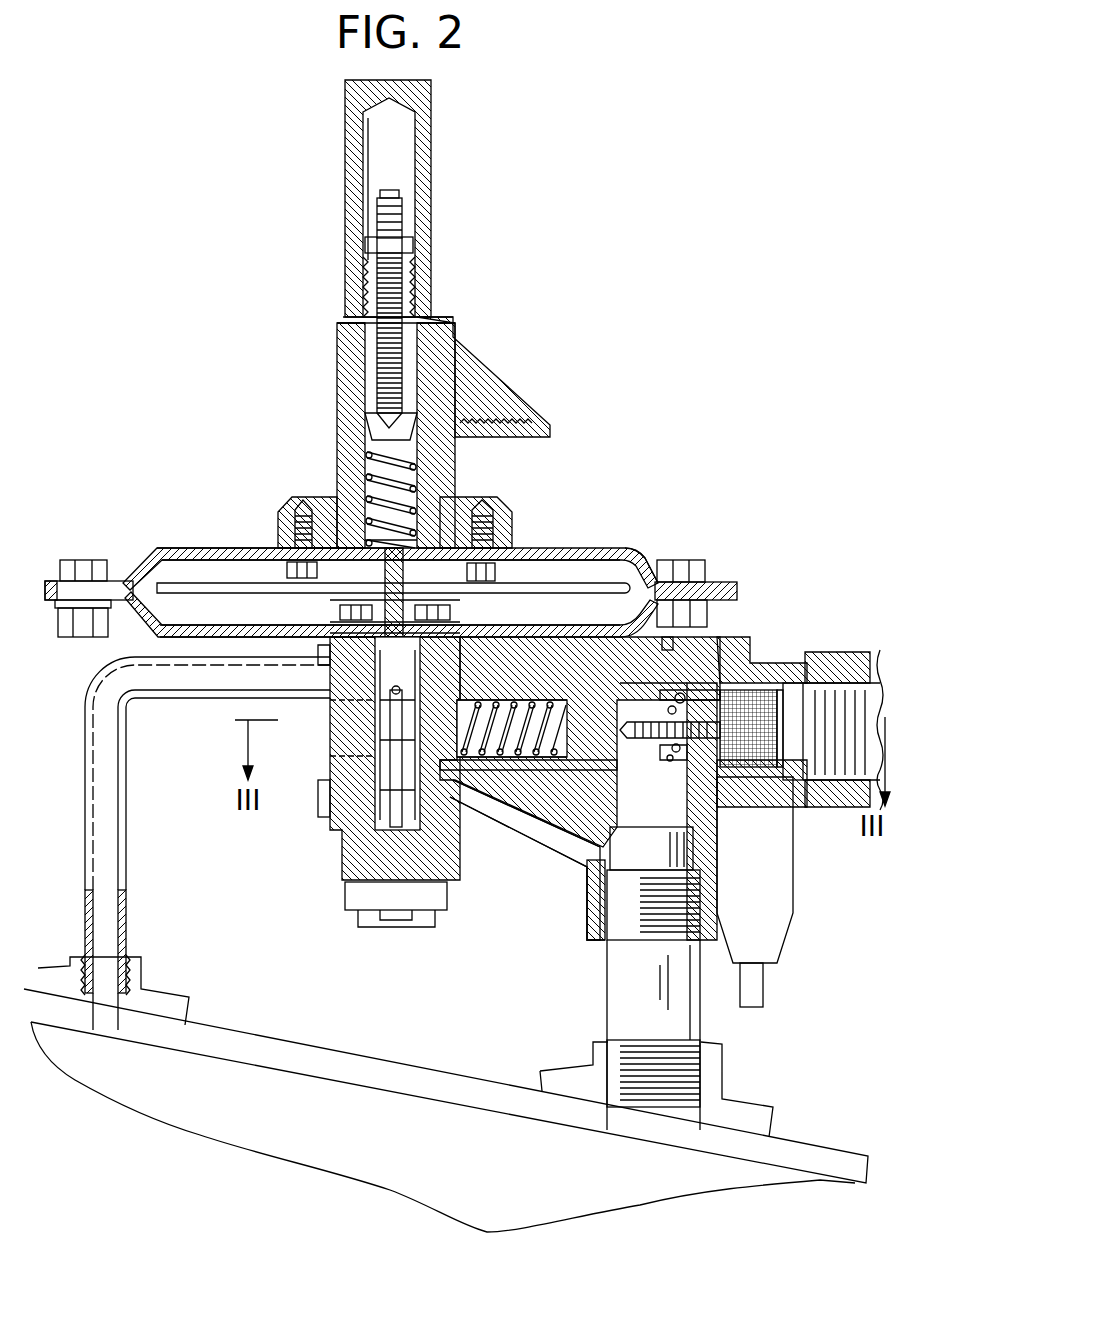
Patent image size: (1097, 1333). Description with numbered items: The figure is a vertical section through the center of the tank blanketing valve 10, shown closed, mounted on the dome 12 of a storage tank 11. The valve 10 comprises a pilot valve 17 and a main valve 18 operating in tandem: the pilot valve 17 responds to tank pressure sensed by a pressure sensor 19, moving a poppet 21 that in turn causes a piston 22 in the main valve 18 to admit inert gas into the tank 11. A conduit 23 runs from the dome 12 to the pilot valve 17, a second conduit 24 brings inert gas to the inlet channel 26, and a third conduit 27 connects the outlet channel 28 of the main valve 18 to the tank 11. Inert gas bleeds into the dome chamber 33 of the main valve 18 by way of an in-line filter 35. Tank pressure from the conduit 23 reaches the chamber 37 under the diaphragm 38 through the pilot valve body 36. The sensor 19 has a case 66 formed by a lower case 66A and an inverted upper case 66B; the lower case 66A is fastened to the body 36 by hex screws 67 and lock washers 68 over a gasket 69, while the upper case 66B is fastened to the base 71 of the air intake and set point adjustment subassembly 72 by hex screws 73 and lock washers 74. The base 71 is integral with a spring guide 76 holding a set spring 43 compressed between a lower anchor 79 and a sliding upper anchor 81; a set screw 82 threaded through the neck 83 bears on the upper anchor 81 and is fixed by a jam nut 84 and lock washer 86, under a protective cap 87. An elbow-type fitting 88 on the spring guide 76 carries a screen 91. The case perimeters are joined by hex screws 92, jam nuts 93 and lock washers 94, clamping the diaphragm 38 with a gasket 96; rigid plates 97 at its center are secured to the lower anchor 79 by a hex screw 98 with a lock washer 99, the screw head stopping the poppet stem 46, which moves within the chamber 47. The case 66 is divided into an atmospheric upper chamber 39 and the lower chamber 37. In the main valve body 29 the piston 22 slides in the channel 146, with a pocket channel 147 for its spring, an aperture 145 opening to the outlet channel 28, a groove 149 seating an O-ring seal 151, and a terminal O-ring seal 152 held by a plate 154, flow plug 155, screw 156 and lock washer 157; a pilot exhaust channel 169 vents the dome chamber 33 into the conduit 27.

The tank blanketing valve 10 is at (590, 436).
The storage tank 11 is at (368, 1165).
The dome 12 is at (332, 1053).
The pilot valve 17 is at (335, 840).
The main valve 18 is at (575, 878).
The pressure sensor 19 is at (520, 545).
The poppet 21 is at (330, 735).
The piston 22 is at (560, 745).
The conduit 23 is at (125, 780).
The conduit 24 is at (840, 668).
The inlet channel 26 is at (825, 690).
The conduit 27 is at (607, 1000).
The outlet channel 28 is at (607, 935).
The body 29 is at (520, 820).
The dome chamber 33 is at (540, 725).
The in-line filter 35 is at (795, 905).
The body 36 is at (330, 758).
The chamber 37 is at (205, 632).
The diaphragm 38 is at (143, 578).
The upper chamber 39 is at (605, 570).
The set spring 43 is at (405, 470).
The stem 46 is at (322, 662).
The chamber 47 is at (345, 712).
The case 66 is at (220, 548).
The lower case 66A is at (160, 625).
The upper case 66B is at (165, 548).
The hex screws 67 is at (340, 612).
The lock washers 68 is at (330, 601).
The gasket 69 is at (330, 634).
The base 71 is at (290, 497).
The air intake and set point adjustment subassembly 72 is at (330, 365).
The hex screws 73 is at (287, 572).
The lock washers 74 is at (300, 548).
The spring guide 76 is at (337, 415).
The lower anchor 79 is at (345, 540).
The upper anchor 81 is at (365, 400).
The set screw 82 is at (343, 320).
The neck 83 is at (362, 270).
The jam nut 84 is at (410, 237).
The lock washer 86 is at (412, 255).
The protective cap 87 is at (433, 160).
The elbow-type fitting 88 is at (470, 355).
The screen 91 is at (510, 432).
The hex screws 92 is at (82, 560).
The jam nuts 93 is at (65, 637).
The lock washers 94 is at (58, 604).
The gasket 96 is at (738, 592).
The rigid plates 97 is at (660, 597).
The hex screw 98 is at (408, 562).
The lock washer 99 is at (450, 535).
The aperture 145 is at (640, 742).
The channel 146 is at (625, 780).
The pocket channel 147 is at (520, 790).
The circumferential groove 149 is at (623, 701).
The O-ring seal 151 is at (620, 683).
The O-ring seal 152 is at (672, 750).
The plate 154 is at (730, 690).
The flow plug 155 is at (705, 800).
The screw 156 is at (780, 770).
The lock washer 157 is at (730, 770).
The pilot exhaust channel 169 is at (540, 822).